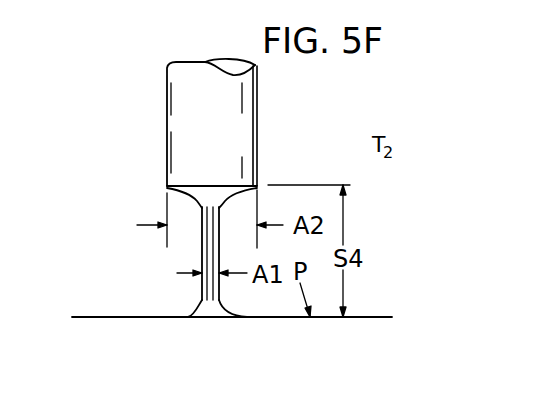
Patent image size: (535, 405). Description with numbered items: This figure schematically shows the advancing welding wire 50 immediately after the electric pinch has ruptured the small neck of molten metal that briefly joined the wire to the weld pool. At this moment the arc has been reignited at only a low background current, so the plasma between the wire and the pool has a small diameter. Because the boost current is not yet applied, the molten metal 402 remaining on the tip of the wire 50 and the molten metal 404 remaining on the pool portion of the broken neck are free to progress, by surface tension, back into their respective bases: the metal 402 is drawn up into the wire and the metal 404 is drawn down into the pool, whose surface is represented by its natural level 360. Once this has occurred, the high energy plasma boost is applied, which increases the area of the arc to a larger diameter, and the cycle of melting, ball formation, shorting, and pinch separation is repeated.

The welding wire 50 is at (253, 133).
The molten metal on wire tip 402 is at (198, 207).
The molten metal of pool 404 is at (220, 303).
The natural level of the pool 360 is at (140, 317).